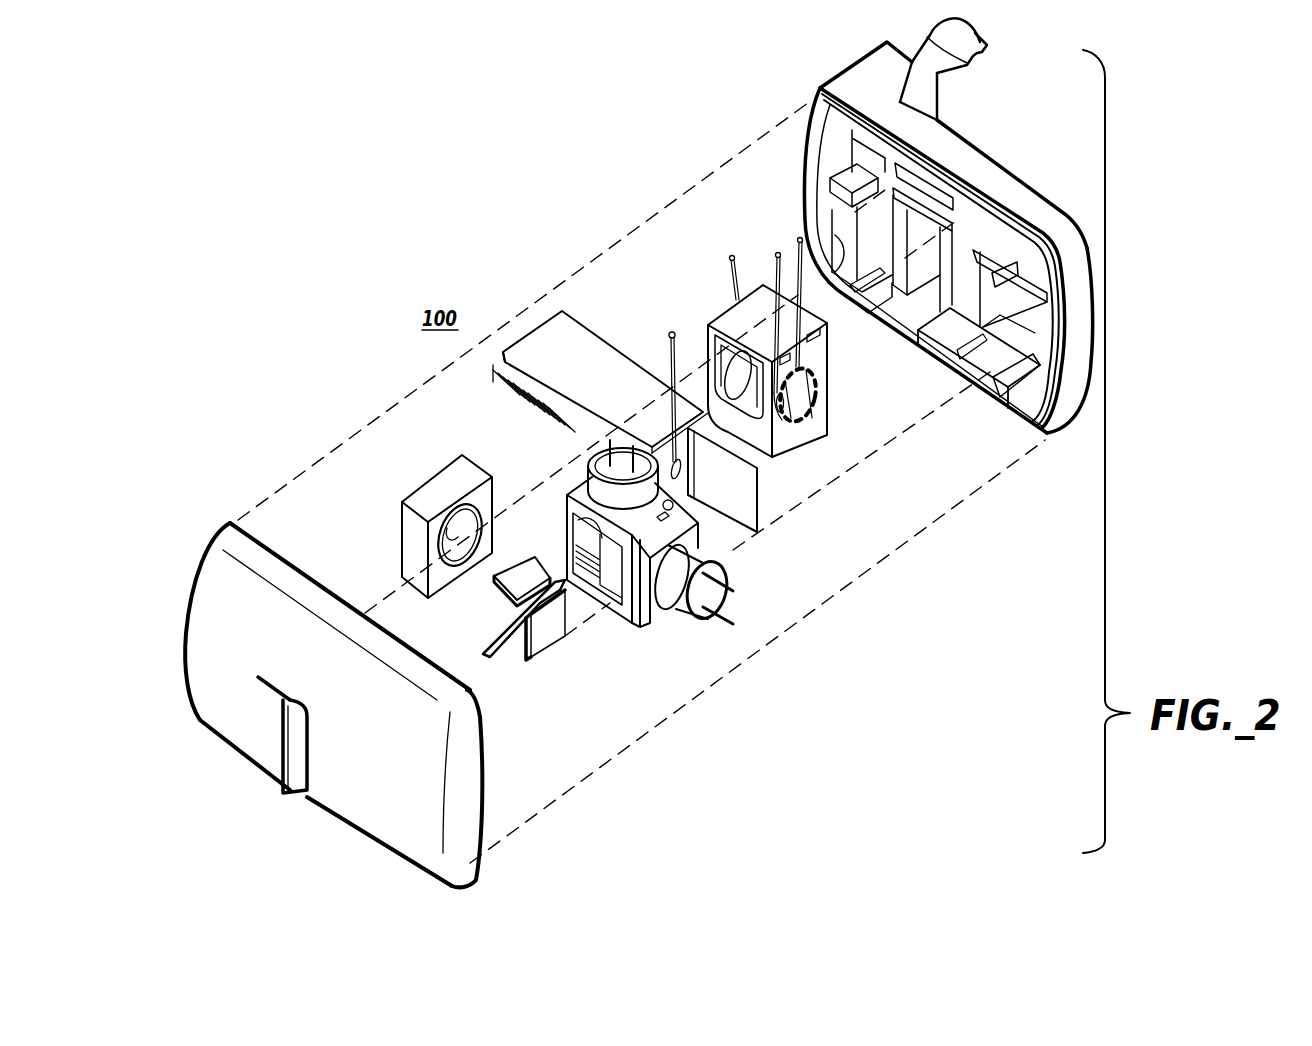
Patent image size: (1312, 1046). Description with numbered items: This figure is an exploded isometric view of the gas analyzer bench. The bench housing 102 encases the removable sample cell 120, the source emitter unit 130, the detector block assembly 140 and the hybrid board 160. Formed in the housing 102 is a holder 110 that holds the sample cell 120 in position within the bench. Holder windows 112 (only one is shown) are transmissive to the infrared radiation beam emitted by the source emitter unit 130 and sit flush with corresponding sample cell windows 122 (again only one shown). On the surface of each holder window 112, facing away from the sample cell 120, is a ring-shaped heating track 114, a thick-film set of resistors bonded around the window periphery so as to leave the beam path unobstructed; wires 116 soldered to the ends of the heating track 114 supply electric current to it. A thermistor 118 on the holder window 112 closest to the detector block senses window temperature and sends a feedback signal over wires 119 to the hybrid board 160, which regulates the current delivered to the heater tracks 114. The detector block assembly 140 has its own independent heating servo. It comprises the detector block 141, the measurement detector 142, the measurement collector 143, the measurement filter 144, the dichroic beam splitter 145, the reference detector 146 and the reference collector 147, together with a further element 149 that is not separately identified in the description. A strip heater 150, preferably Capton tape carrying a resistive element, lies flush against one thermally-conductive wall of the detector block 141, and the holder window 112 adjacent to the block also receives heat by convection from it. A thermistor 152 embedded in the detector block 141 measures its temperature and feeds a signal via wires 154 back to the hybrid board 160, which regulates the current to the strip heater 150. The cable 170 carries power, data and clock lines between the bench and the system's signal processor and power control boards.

The bench housing 102 is at (254, 640).
The holder 110 is at (290, 755).
The holder windows 112 is at (815, 395).
The heating tracks 114 is at (815, 405).
The wires 116 is at (800, 238).
The thermistor 118 is at (790, 412).
The wires 119 is at (775, 300).
The removable sample cell 120 is at (737, 318).
The sample cell windows 122 is at (736, 372).
The source emitter unit 130 is at (435, 490).
The detector block assembly 140 is at (642, 549).
The detector block 141 is at (566, 500).
The measurement detector 142 is at (724, 586).
The measurement collector 143 is at (671, 598).
The measurement filter 144 is at (556, 652).
The dichroic beam splitter 145 is at (500, 655).
The reference detector 146 is at (612, 457).
The reference collector 147 is at (645, 513).
The plate 149 is at (517, 588).
The strip heater 150 is at (752, 494).
The thermistor 152 is at (683, 484).
The wires 154 is at (668, 345).
The hybrid board 160 is at (587, 362).
The cable 170 is at (960, 78).